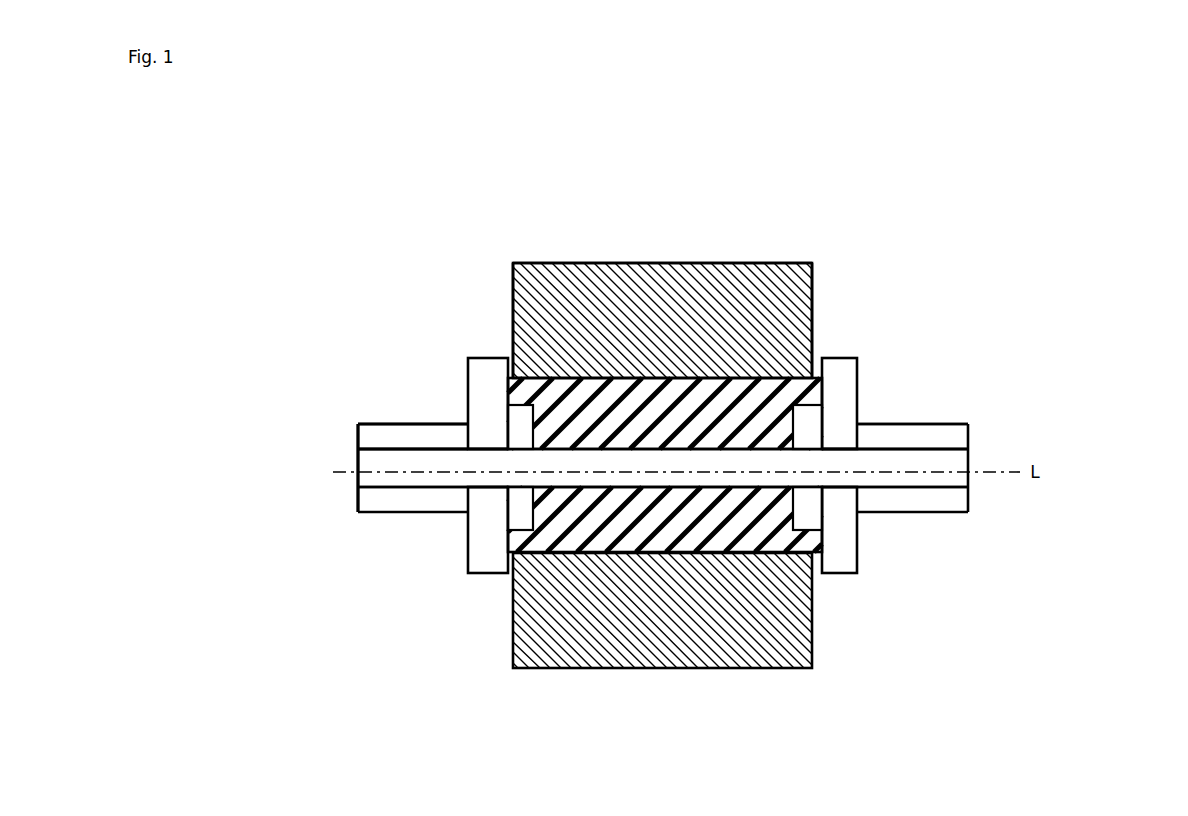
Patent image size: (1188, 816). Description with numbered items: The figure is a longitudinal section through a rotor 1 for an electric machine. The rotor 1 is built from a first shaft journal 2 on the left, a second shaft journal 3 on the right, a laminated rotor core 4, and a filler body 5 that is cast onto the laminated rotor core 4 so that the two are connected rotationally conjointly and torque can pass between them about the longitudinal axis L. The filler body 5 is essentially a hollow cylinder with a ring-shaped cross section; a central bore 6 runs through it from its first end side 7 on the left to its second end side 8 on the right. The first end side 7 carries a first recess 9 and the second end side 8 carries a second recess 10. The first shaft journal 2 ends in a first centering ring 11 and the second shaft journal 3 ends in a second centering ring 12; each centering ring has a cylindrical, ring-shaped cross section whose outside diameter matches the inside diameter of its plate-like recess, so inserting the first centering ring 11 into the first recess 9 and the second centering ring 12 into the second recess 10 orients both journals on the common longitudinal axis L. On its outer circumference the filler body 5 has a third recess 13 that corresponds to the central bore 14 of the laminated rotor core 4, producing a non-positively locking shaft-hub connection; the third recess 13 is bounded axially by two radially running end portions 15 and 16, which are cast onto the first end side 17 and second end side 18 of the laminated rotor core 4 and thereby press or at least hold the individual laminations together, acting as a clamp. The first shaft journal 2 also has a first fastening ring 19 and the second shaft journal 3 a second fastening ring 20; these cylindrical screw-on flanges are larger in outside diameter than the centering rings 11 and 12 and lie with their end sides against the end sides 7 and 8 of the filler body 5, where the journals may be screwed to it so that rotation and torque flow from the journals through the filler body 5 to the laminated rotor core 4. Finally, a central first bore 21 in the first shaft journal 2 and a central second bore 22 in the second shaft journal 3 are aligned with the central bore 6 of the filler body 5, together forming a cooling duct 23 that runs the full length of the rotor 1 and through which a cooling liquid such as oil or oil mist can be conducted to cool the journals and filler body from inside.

The rotor 1 is at (805, 147).
The first shaft journal 2 is at (440, 422).
The second shaft journal 3 is at (900, 440).
The laminated rotor core 4 is at (813, 315).
The filler body 5 is at (697, 540).
The central bore 6 is at (514, 554).
The first end side 7 is at (490, 438).
The second end side 8 is at (835, 435).
The first recess 9 is at (533, 498).
The second recess 10 is at (805, 500).
The first centering ring 11 is at (520, 423).
The second centering ring 12 is at (805, 428).
The third recess 13 is at (653, 370).
The central bore 14 is at (735, 383).
The end portion 15 is at (511, 366).
The end portion 16 is at (857, 352).
The first end side 17 is at (508, 288).
The second end side 18 is at (815, 283).
The first fastening ring 19 is at (485, 555).
The second fastening ring 20 is at (837, 555).
The first bore 21 is at (440, 460).
The second bore 22 is at (882, 462).
The cooling duct 23 is at (350, 478).